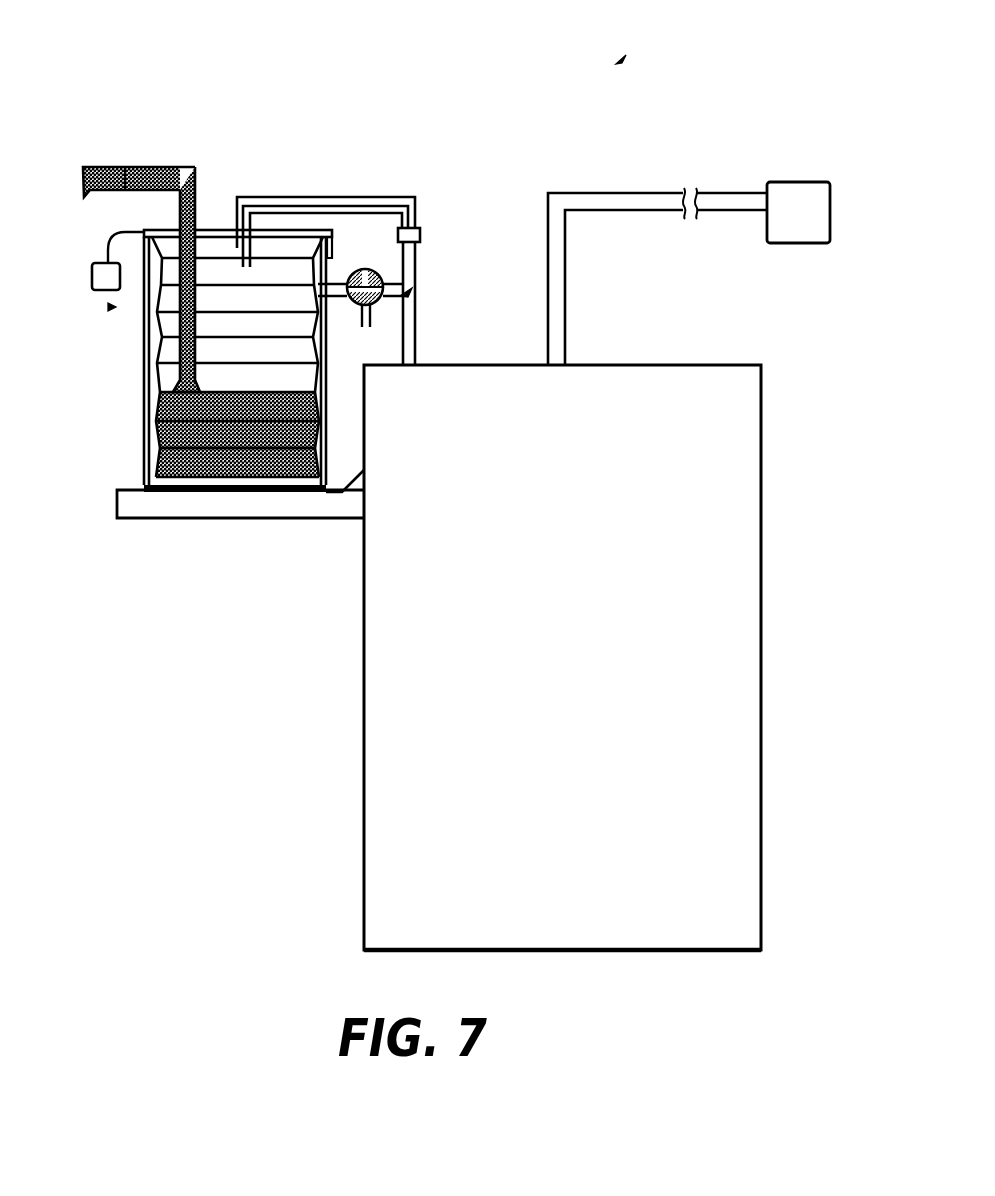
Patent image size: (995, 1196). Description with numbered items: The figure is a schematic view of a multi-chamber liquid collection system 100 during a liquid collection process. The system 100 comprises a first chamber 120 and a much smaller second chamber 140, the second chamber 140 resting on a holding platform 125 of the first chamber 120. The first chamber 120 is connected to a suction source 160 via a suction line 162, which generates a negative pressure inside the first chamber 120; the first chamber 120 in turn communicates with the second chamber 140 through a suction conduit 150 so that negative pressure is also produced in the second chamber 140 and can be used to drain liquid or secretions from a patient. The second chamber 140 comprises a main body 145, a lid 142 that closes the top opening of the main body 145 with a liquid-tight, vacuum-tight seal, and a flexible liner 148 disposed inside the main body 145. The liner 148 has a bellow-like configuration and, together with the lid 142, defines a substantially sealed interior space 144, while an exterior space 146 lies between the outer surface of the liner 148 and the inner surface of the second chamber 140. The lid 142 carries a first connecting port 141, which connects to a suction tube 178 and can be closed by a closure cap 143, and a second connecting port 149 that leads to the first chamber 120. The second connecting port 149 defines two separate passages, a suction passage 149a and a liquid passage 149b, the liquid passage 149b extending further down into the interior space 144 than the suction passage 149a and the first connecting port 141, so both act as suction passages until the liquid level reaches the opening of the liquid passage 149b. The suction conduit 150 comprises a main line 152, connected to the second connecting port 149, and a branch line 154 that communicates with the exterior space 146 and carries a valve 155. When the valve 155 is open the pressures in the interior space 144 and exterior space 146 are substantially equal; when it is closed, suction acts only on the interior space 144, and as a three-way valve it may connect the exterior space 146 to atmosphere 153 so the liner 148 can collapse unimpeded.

The multi-chamber liquid collection system 100 is at (618, 62).
The first chamber 120 is at (733, 410).
The holding platform 125 is at (223, 513).
The second chamber 140 is at (108, 307).
The first connecting port 141 is at (190, 170).
The lid 142 is at (210, 223).
The closure cap 143 is at (103, 253).
The interior space 144 is at (237, 380).
The main body 145 is at (145, 330).
The exterior space 146 is at (152, 448).
The flexible liner 148 is at (160, 380).
The second connecting port 149 is at (343, 197).
The suction passage 149a is at (290, 195).
The liquid passage 149b is at (320, 205).
The suction conduit 150 is at (405, 294).
The main line 152 is at (408, 318).
The atmosphere 153 is at (390, 290).
The branch line 154 is at (367, 312).
The valve 155 is at (377, 270).
The suction source 160 is at (787, 192).
The suction line 162 is at (587, 200).
The suction tube 178 is at (105, 168).